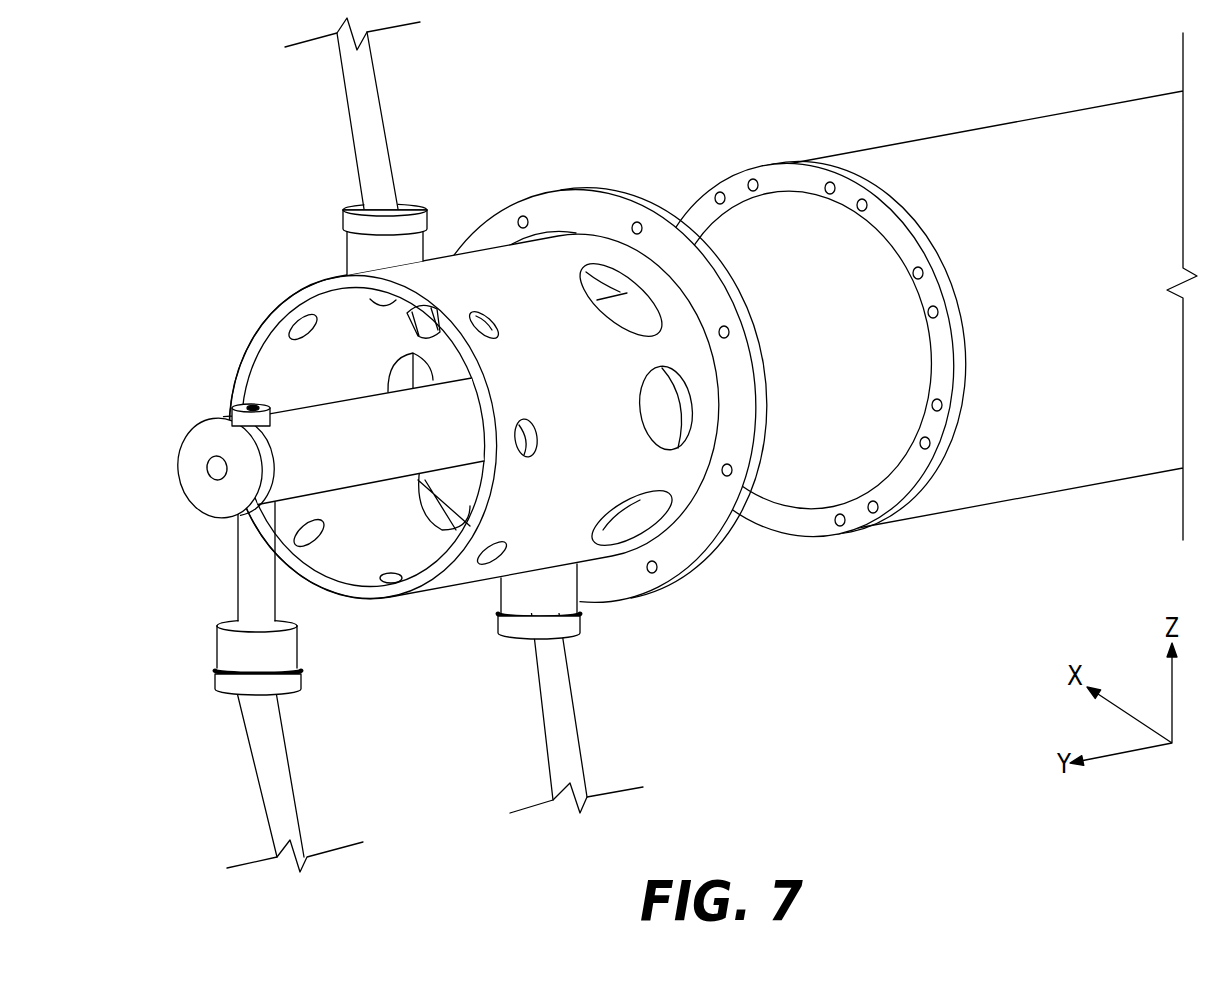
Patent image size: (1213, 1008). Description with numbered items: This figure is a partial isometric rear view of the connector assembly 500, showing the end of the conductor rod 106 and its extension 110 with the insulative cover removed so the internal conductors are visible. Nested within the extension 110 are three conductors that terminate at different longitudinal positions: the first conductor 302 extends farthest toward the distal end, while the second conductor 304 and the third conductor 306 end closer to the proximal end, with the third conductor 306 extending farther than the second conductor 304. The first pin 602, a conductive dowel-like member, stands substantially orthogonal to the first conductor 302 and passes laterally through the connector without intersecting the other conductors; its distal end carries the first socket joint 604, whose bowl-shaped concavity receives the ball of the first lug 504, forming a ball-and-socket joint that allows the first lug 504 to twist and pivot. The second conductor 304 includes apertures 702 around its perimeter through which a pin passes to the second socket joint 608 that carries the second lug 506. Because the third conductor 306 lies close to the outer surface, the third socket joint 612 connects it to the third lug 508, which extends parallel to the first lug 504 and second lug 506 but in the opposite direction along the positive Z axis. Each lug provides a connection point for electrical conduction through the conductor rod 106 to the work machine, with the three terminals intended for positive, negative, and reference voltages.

The conductor rod 106 is at (1020, 137).
The extension 110 is at (707, 217).
The first conductor 302 is at (300, 433).
The second conductor 304 is at (437, 350).
The third conductor 306 is at (397, 593).
The connector assembly 500 is at (792, 814).
The first lug 504 is at (277, 835).
The second lug 506 is at (557, 775).
The third lug 508 is at (385, 112).
The first pin 602 is at (242, 557).
The first socket joint 604 is at (233, 662).
The second socket joint 608 is at (570, 602).
The third socket joint 612 is at (357, 252).
The apertures 702 is at (603, 290).